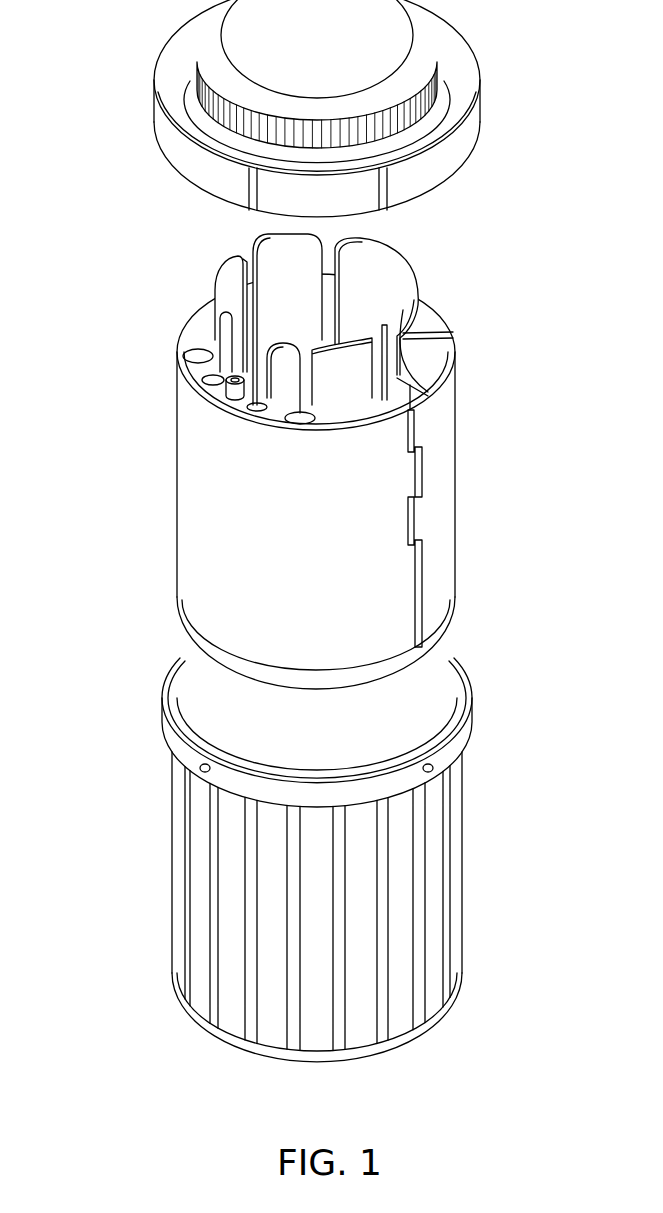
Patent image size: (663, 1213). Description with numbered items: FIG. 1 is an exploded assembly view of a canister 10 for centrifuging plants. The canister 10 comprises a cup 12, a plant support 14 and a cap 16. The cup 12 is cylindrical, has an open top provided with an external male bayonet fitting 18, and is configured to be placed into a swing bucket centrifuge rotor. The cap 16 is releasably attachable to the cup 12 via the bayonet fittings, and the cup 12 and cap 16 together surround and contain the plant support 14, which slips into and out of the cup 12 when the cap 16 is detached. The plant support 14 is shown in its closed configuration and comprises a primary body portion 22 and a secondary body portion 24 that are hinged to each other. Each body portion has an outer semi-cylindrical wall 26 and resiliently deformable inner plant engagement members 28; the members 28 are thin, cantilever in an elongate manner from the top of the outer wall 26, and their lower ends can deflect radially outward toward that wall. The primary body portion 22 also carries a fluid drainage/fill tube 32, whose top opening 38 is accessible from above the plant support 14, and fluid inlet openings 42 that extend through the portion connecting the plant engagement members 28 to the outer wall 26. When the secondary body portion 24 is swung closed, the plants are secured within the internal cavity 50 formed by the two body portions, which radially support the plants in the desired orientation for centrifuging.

The canister 10 is at (76, 259).
The cup 12 is at (430, 880).
The plant support 14 is at (442, 432).
The cap 16 is at (455, 75).
The external male bayonet fitting 18 is at (200, 770).
The primary body portion 22 is at (188, 530).
The secondary body portion 24 is at (447, 515).
The outer semi-cylindrical wall 26 is at (190, 580).
The plant engagement members 28 is at (275, 258).
The fluid drainage/fill tube 32 is at (232, 395).
The top opening 38 is at (203, 377).
The fluid inlet openings 42 is at (195, 355).
The internal cavity 50 is at (352, 320).